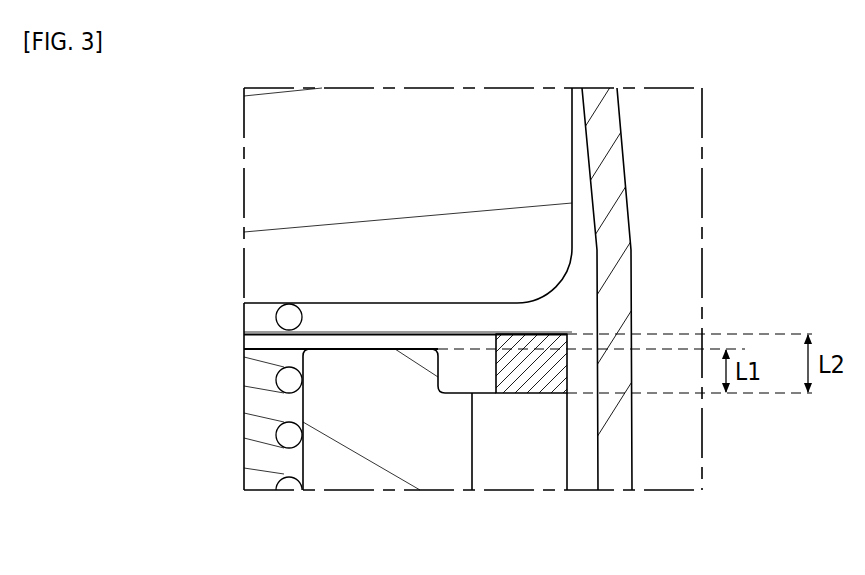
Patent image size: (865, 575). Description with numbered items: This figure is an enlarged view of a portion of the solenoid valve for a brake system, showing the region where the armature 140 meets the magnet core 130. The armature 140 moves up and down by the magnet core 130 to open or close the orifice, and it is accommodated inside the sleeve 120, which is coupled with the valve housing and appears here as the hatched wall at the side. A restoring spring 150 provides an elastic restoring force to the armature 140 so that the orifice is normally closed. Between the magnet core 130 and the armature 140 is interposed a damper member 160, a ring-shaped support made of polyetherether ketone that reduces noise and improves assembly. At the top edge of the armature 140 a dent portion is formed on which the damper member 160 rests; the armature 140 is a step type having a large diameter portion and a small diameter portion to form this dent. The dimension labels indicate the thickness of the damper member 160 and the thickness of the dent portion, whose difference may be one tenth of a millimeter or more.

The sleeve 120 is at (618, 478).
The magnet core 130 is at (258, 190).
The armature 140 is at (357, 478).
The restoring spring 150 is at (258, 378).
The damper member 160 is at (258, 339).